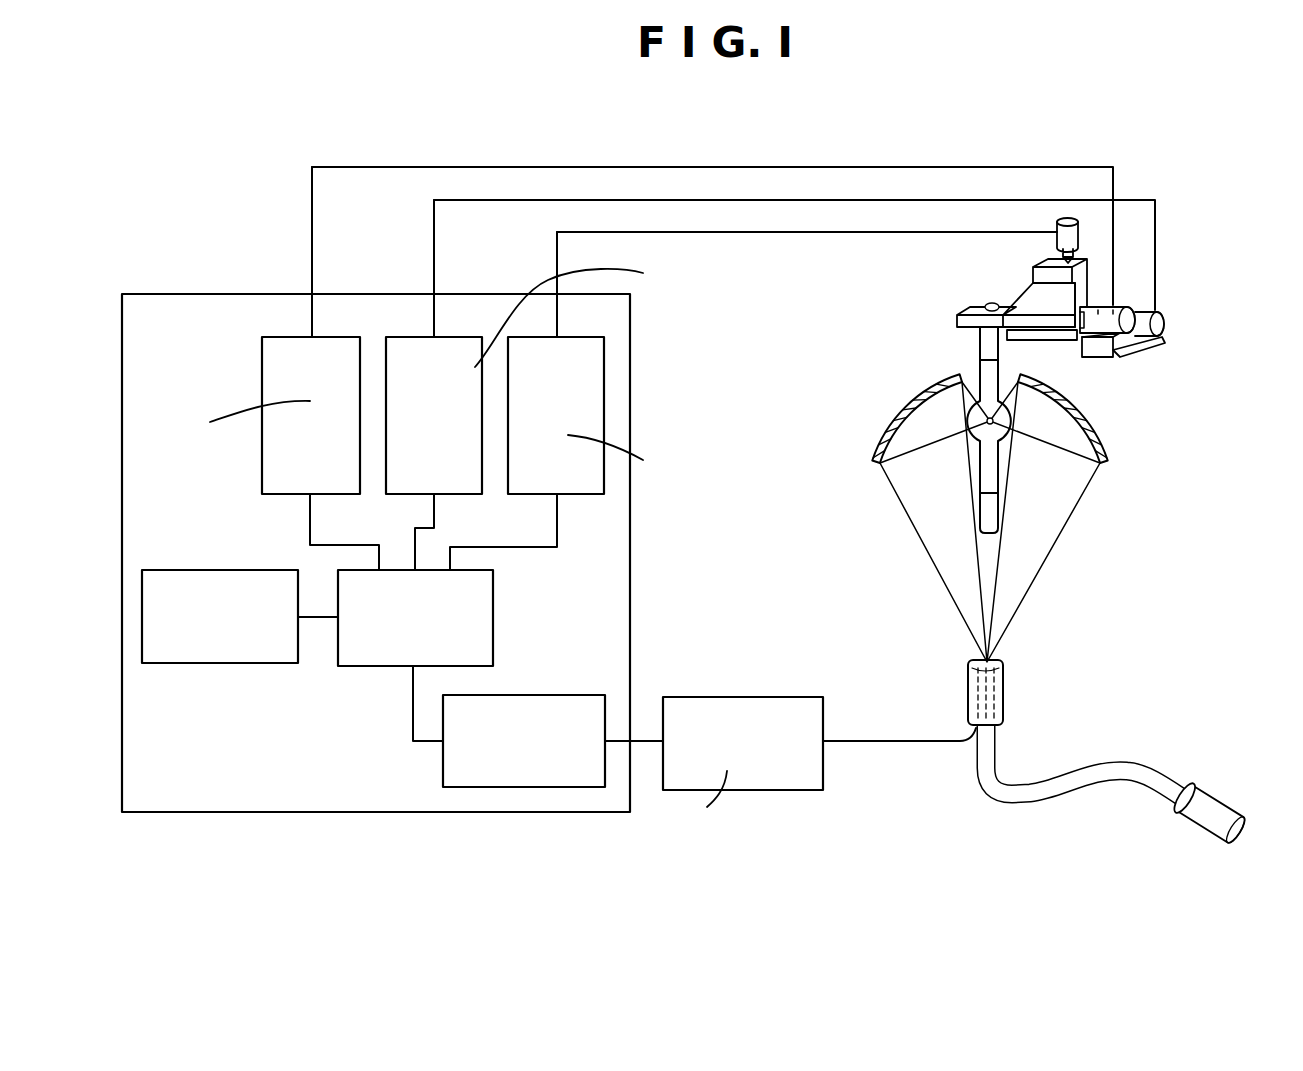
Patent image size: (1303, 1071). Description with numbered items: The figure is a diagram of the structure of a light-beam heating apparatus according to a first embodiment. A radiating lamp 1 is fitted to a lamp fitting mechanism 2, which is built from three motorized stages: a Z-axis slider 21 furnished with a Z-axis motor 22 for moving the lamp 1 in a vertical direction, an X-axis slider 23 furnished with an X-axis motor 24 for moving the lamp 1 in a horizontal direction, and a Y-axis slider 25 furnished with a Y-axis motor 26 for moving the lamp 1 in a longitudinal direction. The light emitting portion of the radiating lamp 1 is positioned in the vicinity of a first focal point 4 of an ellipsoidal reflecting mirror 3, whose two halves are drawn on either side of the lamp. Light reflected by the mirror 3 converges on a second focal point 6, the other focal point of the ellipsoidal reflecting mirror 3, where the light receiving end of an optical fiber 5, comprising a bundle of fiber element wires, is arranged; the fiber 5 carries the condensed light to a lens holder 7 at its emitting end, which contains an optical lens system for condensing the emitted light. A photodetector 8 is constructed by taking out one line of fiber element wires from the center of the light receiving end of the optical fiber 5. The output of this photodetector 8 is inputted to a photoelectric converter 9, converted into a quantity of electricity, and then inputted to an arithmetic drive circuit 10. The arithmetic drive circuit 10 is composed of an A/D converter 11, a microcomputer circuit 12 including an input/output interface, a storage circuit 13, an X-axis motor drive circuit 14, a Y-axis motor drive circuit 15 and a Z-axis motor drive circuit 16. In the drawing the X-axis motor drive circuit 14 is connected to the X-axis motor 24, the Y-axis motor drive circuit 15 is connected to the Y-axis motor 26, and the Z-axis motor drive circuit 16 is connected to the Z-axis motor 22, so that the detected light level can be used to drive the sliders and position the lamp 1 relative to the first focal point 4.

The radiating lamp 1 is at (975, 372).
The lamp fitting mechanism 2 is at (985, 305).
The ellipsoidal reflecting mirror 3 is at (890, 430).
The first focal point 4 is at (978, 437).
The optical fiber 5 is at (1064, 778).
The second focal point 6 is at (1005, 662).
The lens holder 7 is at (1232, 802).
The photodetector 8 is at (889, 743).
The photoelectric converter 9 is at (775, 697).
The arithmetic drive circuit 10 is at (630, 577).
The A/D converter 11 is at (579, 695).
The microcomputer circuit 12 is at (493, 607).
The storage circuit 13 is at (225, 570).
The X-axis motor drive circuit 14 is at (338, 319).
The Y-axis motor drive circuit 15 is at (460, 319).
The Z-axis motor drive circuit 16 is at (583, 319).
The Z-axis slider 21 is at (1033, 273).
The Z-axis motor 22 is at (1057, 230).
The X-axis slider 23 is at (1043, 332).
The X-axis motor 24 is at (1105, 342).
The Y-axis slider 25 is at (1140, 346).
The Y-axis motor 26 is at (1162, 322).